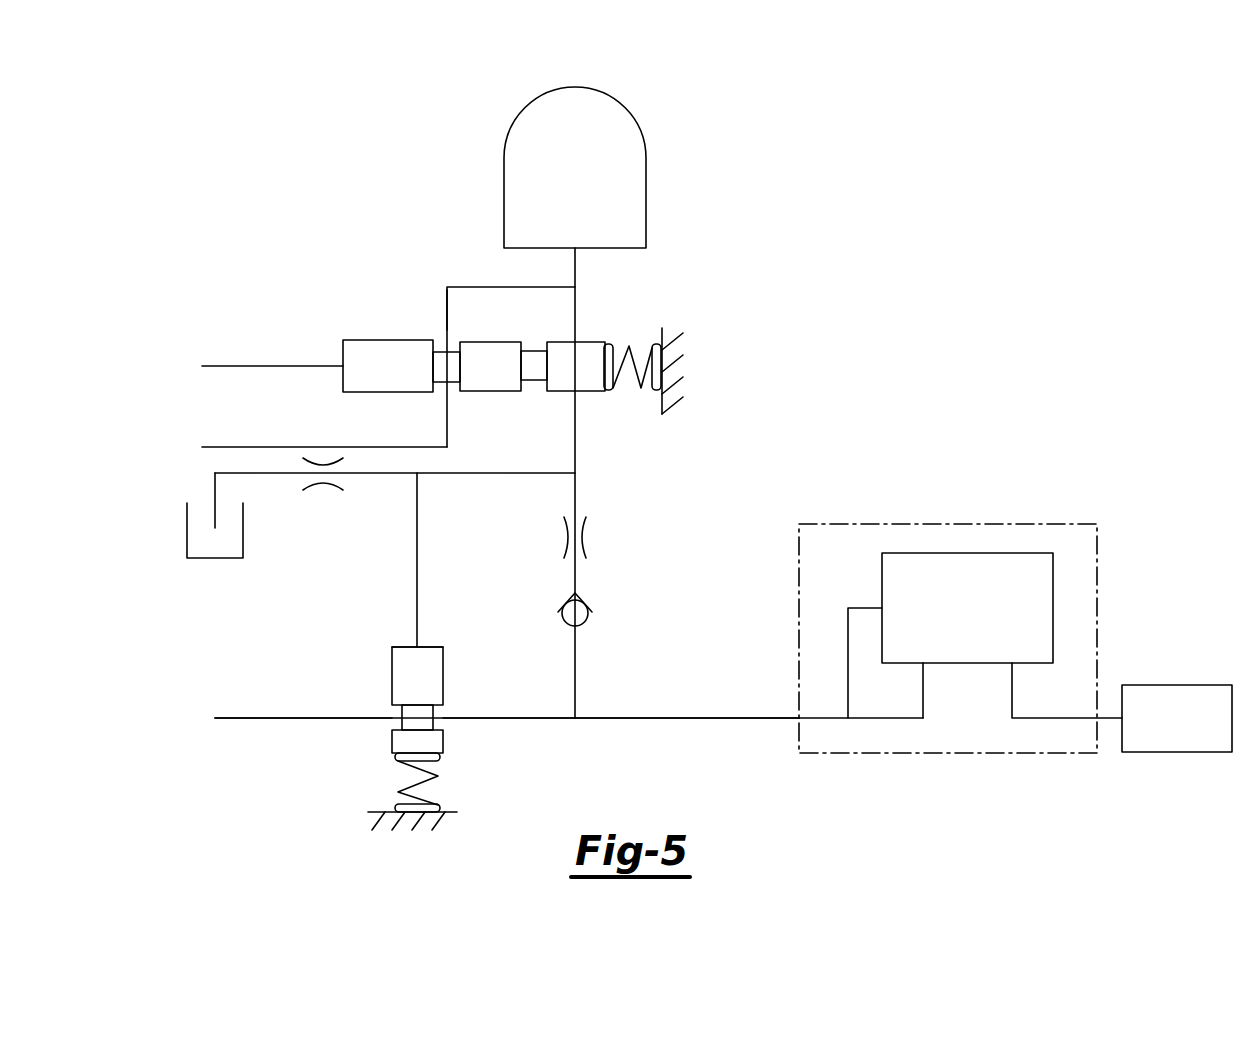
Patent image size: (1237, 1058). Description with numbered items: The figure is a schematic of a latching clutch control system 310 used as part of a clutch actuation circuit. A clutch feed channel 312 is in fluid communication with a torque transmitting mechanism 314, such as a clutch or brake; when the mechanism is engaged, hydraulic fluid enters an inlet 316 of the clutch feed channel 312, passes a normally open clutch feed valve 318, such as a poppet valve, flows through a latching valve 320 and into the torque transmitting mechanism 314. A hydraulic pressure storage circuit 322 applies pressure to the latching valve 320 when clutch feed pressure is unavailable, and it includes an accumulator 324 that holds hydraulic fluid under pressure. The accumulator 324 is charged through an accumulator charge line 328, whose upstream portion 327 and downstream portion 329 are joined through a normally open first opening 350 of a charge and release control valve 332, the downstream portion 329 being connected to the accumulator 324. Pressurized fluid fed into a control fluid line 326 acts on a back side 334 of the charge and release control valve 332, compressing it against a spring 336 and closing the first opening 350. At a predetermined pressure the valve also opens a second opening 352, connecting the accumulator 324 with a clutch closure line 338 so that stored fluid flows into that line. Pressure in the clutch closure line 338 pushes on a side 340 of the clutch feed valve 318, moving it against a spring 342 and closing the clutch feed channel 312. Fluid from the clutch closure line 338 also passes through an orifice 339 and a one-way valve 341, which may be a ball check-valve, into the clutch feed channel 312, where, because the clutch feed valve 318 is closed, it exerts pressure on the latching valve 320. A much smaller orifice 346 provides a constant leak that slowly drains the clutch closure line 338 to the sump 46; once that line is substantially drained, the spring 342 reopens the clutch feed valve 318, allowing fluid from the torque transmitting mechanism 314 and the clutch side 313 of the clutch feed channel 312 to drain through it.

The latching clutch control system 310 is at (848, 306).
The clutch feed channel 312 is at (258, 718).
The clutch side 313 is at (623, 718).
The torque transmitting mechanism 314 is at (1200, 733).
The inlet 316 is at (215, 718).
The clutch feed valve 318 is at (443, 652).
The latching valve 320 is at (1032, 568).
The hydraulic pressure storage circuit 322 is at (624, 278).
The accumulator 324 is at (632, 112).
The control fluid line 326 is at (225, 366).
The upstream portion 327 is at (287, 447).
The accumulator charge line 328 is at (460, 288).
The downstream portion 329 is at (447, 307).
The charge and release control valve 332 is at (597, 391).
The back side 334 is at (343, 385).
The spring 336 is at (628, 347).
The clutch closure line 338 is at (482, 475).
The orifice 339 is at (586, 537).
The side 340 is at (401, 647).
The one-way valve 341 is at (591, 617).
The spring 342 is at (440, 802).
The orifice 346 is at (328, 489).
The first opening 350 is at (450, 382).
The second opening 352 is at (533, 350).
The sump 46 is at (187, 532).